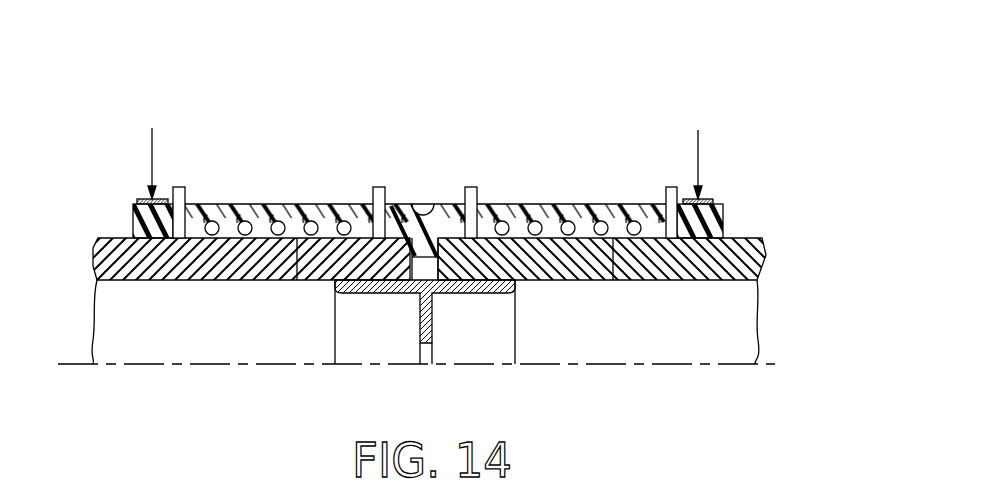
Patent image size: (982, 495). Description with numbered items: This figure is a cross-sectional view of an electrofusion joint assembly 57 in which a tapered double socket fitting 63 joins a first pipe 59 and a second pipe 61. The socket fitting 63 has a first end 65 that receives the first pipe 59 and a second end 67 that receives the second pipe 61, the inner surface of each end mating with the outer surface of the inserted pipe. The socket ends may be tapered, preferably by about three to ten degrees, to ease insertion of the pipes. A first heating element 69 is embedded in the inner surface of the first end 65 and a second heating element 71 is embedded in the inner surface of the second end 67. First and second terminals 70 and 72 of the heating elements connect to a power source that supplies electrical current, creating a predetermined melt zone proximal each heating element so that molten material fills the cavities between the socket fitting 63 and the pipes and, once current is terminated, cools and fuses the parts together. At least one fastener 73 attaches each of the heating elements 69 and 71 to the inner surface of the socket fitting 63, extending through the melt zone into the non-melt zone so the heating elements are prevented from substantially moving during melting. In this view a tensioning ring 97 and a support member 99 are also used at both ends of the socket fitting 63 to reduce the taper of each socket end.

The electrofusion joint assembly 57 is at (575, 60).
The first pipe 59 is at (93, 265).
The second pipe 61 is at (765, 255).
The socket fitting 63 is at (508, 198).
The first end 65 is at (133, 222).
The second end 67 is at (723, 212).
The first heating element 69 is at (244, 217).
The first terminal 70 is at (180, 187).
The second heating element 71 is at (596, 207).
The second terminal 72 is at (471, 187).
The fastener 73 is at (297, 280).
The tensioning ring 97 is at (138, 199).
The support member 99 is at (432, 316).